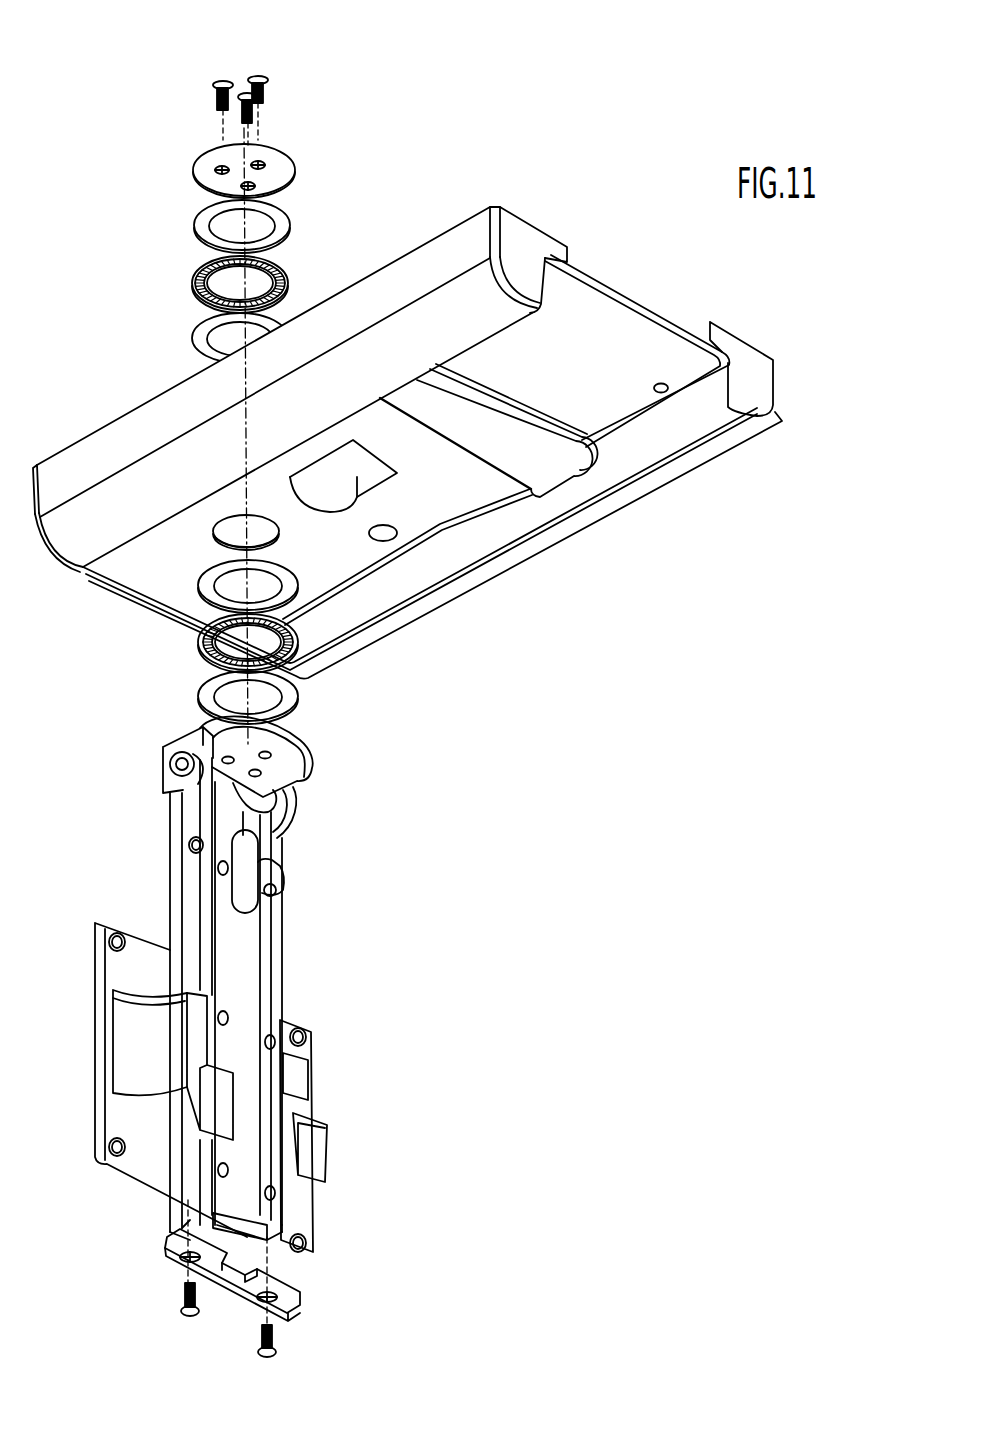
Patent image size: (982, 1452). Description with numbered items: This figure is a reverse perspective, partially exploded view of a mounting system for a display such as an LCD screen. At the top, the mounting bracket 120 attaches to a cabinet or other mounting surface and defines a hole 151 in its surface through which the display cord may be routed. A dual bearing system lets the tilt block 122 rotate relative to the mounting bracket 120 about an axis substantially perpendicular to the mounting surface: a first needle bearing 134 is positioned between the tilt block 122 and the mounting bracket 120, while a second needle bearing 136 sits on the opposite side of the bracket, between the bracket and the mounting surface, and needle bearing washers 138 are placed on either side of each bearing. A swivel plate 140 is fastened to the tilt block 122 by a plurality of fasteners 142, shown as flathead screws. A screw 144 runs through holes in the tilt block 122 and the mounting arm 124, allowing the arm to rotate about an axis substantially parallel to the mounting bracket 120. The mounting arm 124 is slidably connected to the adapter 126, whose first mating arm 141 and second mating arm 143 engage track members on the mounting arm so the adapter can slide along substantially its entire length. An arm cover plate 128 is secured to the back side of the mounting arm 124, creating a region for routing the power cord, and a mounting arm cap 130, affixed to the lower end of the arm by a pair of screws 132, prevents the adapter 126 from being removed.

The mounting bracket 120 is at (773, 368).
The tilt block 122 is at (305, 767).
The mounting arm 124 is at (174, 817).
The adapter 126 is at (310, 1052).
The arm cover plate 128 is at (261, 957).
The mounting arm cap 130 is at (295, 1284).
The screws 132 is at (181, 1313).
The first needle bearing 134 is at (200, 654).
The second needle bearing 136 is at (190, 279).
The needle bearing washers 138 is at (194, 223).
The swivel plate 140 is at (277, 168).
The first mating arm 141 is at (163, 1176).
The fasteners 142 is at (252, 74).
The second mating arm 143 is at (313, 1120).
The screw 144 is at (170, 766).
The hole 151 is at (367, 478).